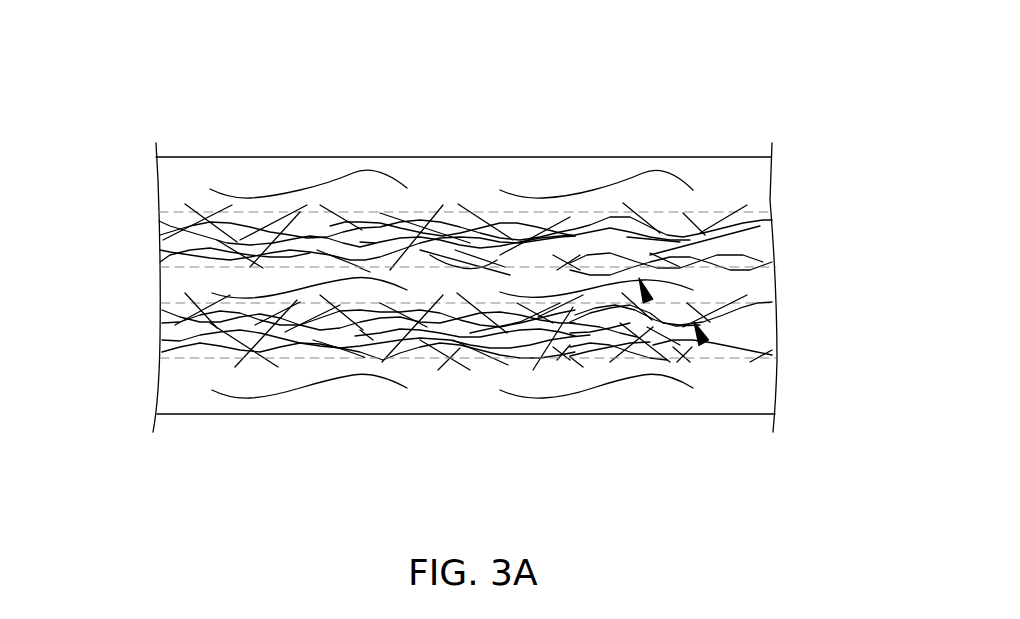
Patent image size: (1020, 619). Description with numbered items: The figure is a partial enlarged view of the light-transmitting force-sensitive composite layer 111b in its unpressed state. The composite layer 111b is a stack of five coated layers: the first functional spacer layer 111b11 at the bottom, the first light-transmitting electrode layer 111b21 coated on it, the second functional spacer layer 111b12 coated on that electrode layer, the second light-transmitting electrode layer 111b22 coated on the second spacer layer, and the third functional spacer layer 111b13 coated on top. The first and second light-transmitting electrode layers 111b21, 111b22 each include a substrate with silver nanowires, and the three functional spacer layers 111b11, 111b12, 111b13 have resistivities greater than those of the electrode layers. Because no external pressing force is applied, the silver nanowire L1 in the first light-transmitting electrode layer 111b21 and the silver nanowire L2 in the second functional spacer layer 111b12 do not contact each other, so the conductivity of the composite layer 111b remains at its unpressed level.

The light-transmitting force-sensitive composite layer 111b is at (108, 31).
The third functional spacer layer 111b13 is at (766, 182).
The second light-transmitting electrode layer 111b22 is at (766, 242).
The second functional spacer layer 111b12 is at (766, 296).
The first light-transmitting electrode layer 111b21 is at (766, 339).
The first functional spacer layer 111b11 is at (766, 384).
The silver nanowire L1 is at (704, 343).
The silver nanowire L2 is at (648, 301).